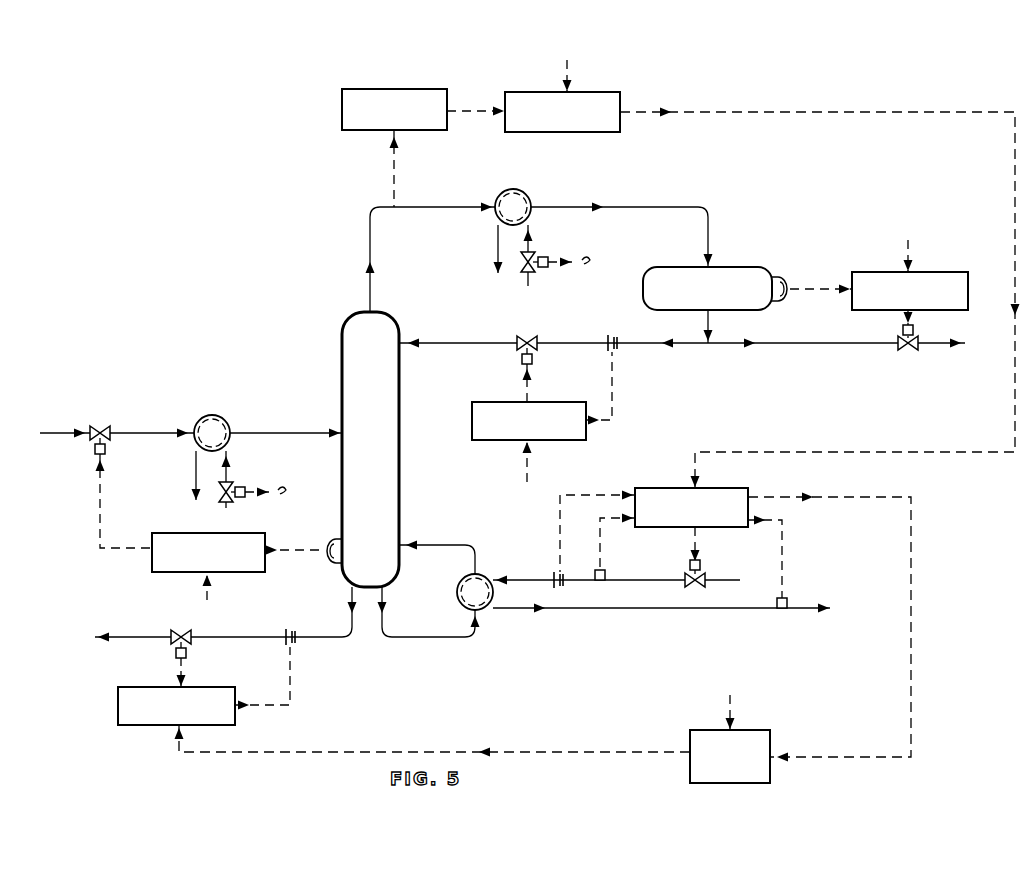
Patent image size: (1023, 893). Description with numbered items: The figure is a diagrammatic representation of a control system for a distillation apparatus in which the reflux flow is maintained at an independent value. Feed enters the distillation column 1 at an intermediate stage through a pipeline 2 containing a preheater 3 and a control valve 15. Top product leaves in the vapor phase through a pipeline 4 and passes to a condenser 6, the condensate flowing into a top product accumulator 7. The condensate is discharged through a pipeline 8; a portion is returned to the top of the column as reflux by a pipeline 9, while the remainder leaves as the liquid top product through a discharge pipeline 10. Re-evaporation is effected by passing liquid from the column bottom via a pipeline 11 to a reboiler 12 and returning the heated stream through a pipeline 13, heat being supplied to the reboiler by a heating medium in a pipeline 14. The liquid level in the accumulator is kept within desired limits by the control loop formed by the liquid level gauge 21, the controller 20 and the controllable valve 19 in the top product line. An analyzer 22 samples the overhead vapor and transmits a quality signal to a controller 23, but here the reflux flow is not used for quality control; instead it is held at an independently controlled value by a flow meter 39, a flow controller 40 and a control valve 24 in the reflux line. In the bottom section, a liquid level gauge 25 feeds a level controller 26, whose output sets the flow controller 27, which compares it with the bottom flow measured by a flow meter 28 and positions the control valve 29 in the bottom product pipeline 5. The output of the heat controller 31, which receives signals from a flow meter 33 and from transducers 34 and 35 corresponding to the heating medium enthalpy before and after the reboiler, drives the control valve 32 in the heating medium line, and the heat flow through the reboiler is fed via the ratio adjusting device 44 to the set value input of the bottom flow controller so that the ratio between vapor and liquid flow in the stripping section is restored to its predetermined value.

The distillation column 1 is at (374, 451).
The pipeline 2 is at (287, 433).
The preheater 3 is at (223, 425).
The pipeline 4 is at (370, 226).
The pipeline 5 is at (338, 637).
The condenser 6 is at (521, 197).
The top product accumulator 7 is at (734, 267).
The pipeline 8 is at (712, 326).
The pipeline 9 is at (676, 349).
The discharge pipeline 10 is at (819, 350).
The pipeline 11 is at (444, 637).
The reboiler 12 is at (458, 588).
The pipeline 13 is at (439, 544).
The pipeline 14 is at (644, 580).
The control valve 15 is at (94, 430).
The controllable valve 19 is at (908, 351).
The controller 20 is at (915, 272).
The liquid level gauge 21 is at (789, 276).
The analyzer 22 is at (400, 90).
The controller 23 is at (588, 92).
The control valve 24 is at (523, 336).
The liquid level gauge 25 is at (330, 541).
The level controller 26 is at (240, 533).
The flow controller 27 is at (215, 687).
The flow meter 28 is at (286, 633).
The control valve 29 is at (180, 632).
The heat controller 31 is at (720, 489).
The control valve 32 is at (700, 582).
The flow meter 33 is at (568, 594).
The transducer 34 is at (606, 579).
The transducer 35 is at (788, 604).
The flow meter 39 is at (625, 331).
The flow controller 40 is at (545, 404).
The ratio adjusting device 44 is at (752, 730).